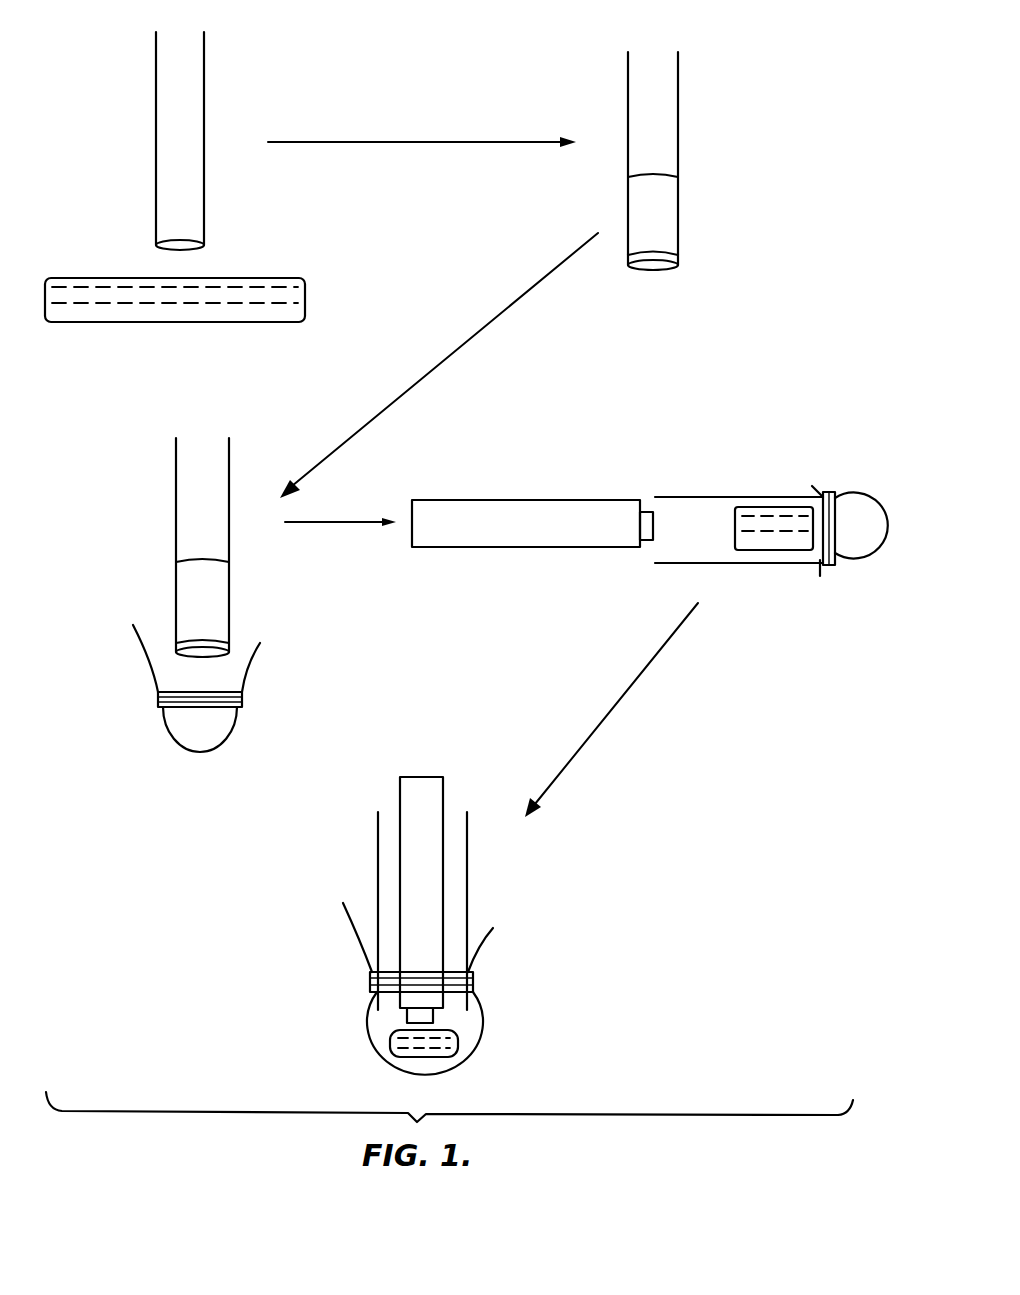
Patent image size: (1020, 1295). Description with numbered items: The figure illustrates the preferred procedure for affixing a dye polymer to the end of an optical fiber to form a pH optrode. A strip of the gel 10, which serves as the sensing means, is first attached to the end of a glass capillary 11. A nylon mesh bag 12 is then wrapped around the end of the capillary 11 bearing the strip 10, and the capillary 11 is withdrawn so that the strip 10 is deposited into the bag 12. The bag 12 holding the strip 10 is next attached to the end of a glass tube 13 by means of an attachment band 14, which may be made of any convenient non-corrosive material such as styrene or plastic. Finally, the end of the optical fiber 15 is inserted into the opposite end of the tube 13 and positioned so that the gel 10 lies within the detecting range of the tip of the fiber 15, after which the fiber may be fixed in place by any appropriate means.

The gel strip 10 is at (100, 290).
The glass capillary 11 is at (156, 126).
The nylon mesh bag 12 is at (143, 668).
The glass tube 13 is at (176, 511).
The attachment band 14 is at (830, 492).
The optical fiber 15 is at (578, 548).